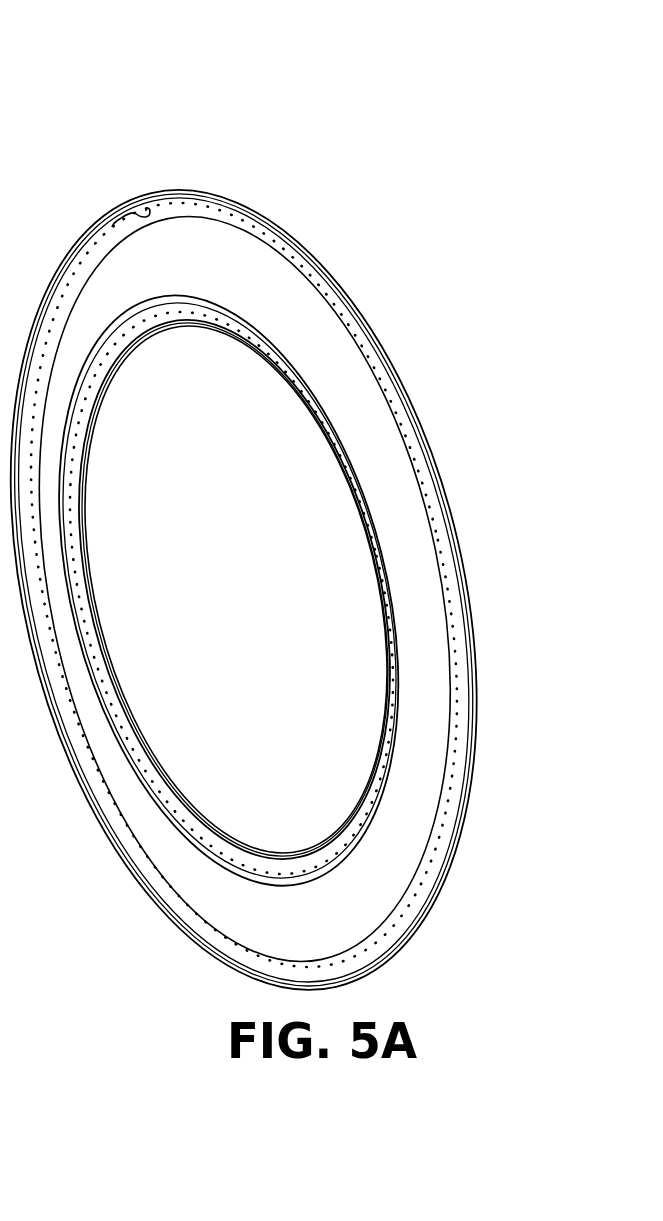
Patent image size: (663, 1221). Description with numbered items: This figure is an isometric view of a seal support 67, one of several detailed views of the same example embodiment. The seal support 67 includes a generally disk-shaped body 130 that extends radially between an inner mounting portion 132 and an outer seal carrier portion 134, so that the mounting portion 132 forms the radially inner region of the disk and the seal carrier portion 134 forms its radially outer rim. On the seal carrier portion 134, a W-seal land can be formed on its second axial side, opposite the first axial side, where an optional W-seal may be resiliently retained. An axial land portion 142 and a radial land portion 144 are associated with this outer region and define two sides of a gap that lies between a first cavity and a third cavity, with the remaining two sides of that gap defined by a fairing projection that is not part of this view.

The seal support 67 is at (410, 173).
The disk-shaped body 130 is at (370, 420).
The inner mounting portion 132 is at (203, 315).
The seal carrier portion 134 is at (254, 217).
The axial land portion 142 is at (135, 212).
The radial land portion 144 is at (347, 298).